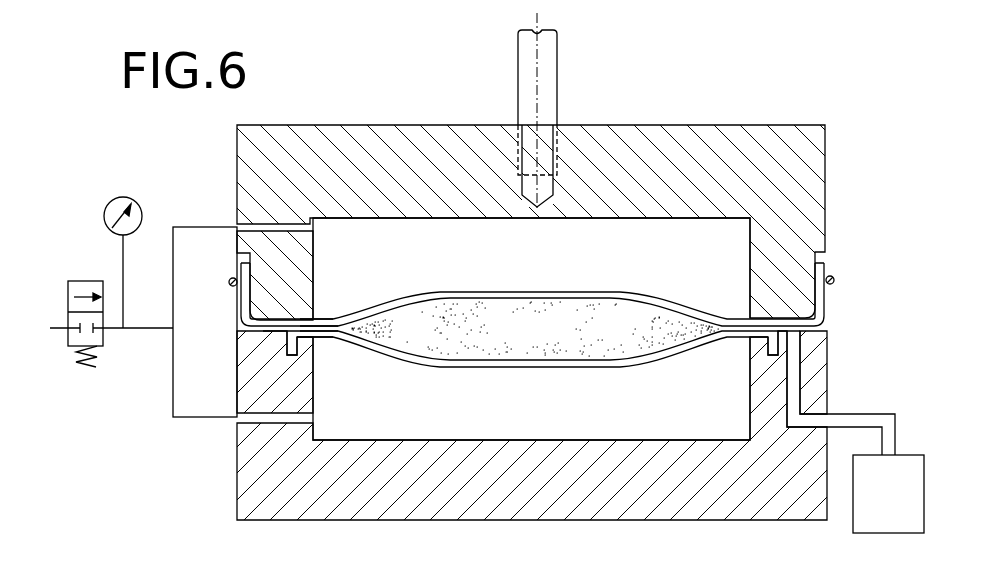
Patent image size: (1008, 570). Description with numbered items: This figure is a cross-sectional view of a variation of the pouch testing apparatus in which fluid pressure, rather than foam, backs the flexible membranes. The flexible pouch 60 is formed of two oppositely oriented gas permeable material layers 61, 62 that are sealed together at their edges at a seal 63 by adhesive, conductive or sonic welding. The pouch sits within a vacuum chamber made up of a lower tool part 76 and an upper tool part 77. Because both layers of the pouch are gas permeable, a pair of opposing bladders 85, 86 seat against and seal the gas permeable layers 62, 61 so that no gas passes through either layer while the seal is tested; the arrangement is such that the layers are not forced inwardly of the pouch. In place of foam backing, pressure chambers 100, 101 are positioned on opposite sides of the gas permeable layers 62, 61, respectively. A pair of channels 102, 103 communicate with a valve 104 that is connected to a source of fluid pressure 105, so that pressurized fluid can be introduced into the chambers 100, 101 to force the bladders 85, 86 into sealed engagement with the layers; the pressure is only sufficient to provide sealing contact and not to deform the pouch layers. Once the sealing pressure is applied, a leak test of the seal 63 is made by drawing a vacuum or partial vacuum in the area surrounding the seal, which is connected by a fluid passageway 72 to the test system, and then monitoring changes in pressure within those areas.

The flexible pouch 60 is at (532, 321).
The gas permeable material layer 61 is at (640, 353).
The gas permeable material layer 62 is at (465, 300).
The seal 63 is at (325, 318).
The fluid passageway 72 is at (800, 370).
The lower tool part 76 is at (252, 498).
The upper tool part 77 is at (403, 133).
The bladder 85 is at (642, 367).
The bladder 86 is at (670, 302).
The pressure chamber 100 is at (638, 263).
The pressure chamber 101 is at (543, 418).
The channel 102 is at (250, 228).
The channel 103 is at (272, 418).
The valve 104 is at (100, 340).
The source of fluid pressure 105 is at (123, 197).